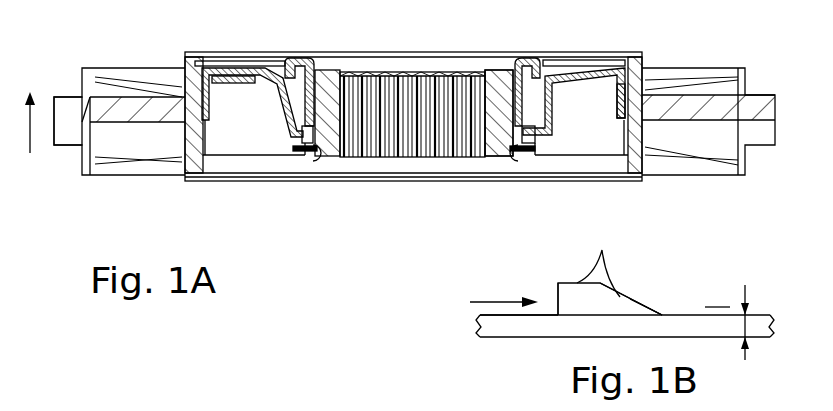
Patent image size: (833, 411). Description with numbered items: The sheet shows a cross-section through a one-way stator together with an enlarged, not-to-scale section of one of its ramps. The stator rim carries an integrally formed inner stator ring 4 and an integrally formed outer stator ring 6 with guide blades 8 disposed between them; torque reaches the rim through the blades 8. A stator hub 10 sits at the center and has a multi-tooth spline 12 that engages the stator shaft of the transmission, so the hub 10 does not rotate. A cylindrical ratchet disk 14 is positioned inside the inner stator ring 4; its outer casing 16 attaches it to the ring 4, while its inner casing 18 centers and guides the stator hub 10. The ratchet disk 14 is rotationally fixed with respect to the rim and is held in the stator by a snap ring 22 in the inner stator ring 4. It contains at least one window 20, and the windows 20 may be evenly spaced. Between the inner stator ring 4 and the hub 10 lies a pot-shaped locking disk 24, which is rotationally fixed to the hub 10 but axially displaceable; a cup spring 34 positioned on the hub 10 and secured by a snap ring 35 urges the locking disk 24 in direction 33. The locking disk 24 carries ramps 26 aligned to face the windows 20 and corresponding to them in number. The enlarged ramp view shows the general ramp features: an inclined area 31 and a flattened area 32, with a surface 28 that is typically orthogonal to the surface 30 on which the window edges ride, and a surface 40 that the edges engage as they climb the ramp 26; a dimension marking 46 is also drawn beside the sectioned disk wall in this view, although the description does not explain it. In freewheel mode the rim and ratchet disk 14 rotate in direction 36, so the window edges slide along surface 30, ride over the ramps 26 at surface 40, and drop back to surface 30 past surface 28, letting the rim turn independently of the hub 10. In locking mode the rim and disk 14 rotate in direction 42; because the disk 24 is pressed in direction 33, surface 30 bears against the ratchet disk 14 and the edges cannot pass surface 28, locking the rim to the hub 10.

In FIG. 1A, the inner stator ring 4 is at (190, 155).
In FIG. 1A, the outer stator ring 6 is at (60, 97).
In FIG. 1A, the guide blades 8 is at (150, 112).
In FIG. 1A, the stator hub 10 is at (500, 82).
In FIG. 1A, the multi-tooth spline 12 is at (447, 72).
In FIG. 1A, the cylindrical ratchet disk 14 is at (603, 50).
In FIG. 1A, the outer casing 16 is at (617, 104).
In FIG. 1A, the inner casing 18 is at (505, 102).
In FIG. 1A, the window 20 is at (267, 63).
In FIG. 1A, the snap ring 22 is at (643, 58).
In FIG. 1A, the locking disk 24 is at (268, 110).
In FIG. 1B, the locking disk 24 is at (522, 328).
In FIG. 1A, the ramp 26 is at (240, 72).
In FIG. 1B, the ramp 26 is at (662, 296).
In FIG. 1B, the surface 28 is at (557, 297).
In FIG. 1B, the surface 30 is at (495, 312).
In FIG. 1B, the inclined area 31 is at (641, 292).
In FIG. 1B, the flattened area 32 is at (577, 298).
In FIG. 1A, the direction 33 is at (32, 146).
In FIG. 1A, the cup spring 34 is at (294, 138).
In FIG. 1A, the snap ring 35 is at (525, 150).
In FIG. 1B, the direction 36 is at (705, 307).
In FIG. 1B, the surface 40 is at (598, 261).
In FIG. 1B, the direction 42 is at (473, 295).
In FIG. 1B, the plate thickness dimension 46 is at (747, 325).